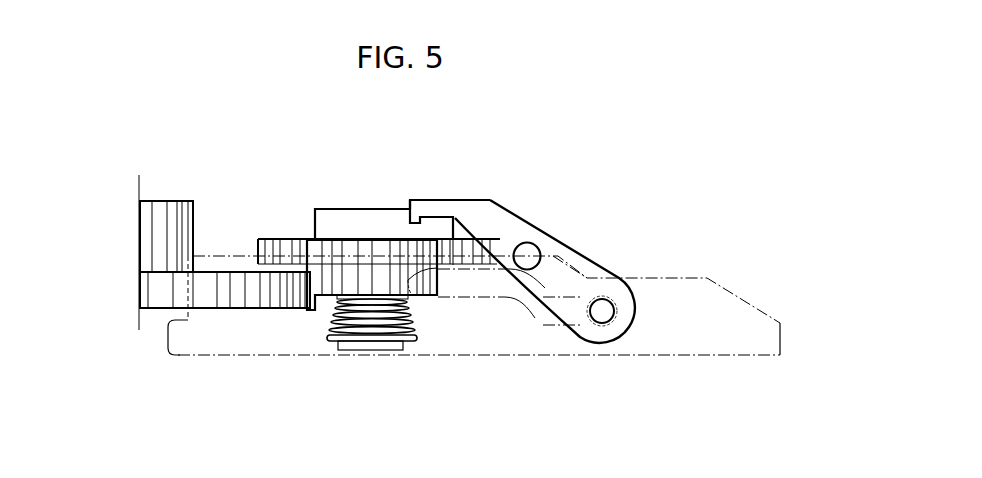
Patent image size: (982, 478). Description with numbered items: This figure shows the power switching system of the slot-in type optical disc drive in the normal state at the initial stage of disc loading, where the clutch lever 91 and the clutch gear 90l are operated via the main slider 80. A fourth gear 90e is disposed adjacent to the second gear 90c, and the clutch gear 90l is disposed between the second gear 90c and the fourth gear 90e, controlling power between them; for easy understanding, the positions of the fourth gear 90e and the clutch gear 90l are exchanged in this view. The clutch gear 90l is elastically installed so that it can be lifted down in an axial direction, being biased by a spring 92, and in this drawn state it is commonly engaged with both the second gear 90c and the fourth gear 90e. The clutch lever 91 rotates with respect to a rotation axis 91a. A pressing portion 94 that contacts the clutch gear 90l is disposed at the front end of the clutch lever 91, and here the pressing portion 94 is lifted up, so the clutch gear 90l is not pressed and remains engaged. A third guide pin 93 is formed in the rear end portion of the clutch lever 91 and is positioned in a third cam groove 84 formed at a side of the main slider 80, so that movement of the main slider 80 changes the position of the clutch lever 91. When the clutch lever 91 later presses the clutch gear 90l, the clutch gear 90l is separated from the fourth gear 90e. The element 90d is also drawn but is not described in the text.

The main slider 80 is at (692, 343).
The third cam groove 84 is at (538, 315).
The second gear 90c is at (148, 292).
The upright block 90d is at (148, 238).
The fourth gear 90e is at (263, 238).
The clutch gear 90l is at (350, 250).
The clutch lever 91 is at (590, 258).
The rotation axis 91a is at (529, 248).
The spring 92 is at (417, 329).
The third guide pin 93 is at (601, 322).
The pressing portion 94 is at (405, 222).